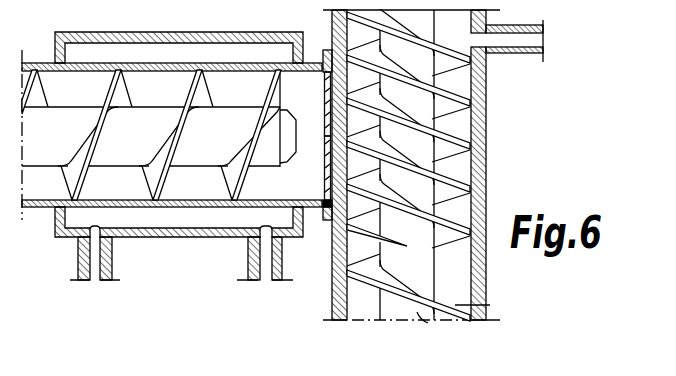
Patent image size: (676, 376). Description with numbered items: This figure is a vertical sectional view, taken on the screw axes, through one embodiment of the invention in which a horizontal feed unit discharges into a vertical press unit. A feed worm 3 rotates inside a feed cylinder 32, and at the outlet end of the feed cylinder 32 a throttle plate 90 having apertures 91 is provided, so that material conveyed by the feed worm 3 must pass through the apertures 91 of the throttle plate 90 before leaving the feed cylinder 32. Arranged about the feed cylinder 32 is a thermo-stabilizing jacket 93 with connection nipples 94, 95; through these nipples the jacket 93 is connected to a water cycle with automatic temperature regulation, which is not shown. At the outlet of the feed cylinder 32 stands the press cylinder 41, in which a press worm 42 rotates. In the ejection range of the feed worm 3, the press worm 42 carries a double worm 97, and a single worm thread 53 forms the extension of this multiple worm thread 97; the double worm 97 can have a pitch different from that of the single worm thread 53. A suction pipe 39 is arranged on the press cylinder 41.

The feed worm 3 is at (234, 116).
The feed cylinder 32 is at (132, 210).
The suction pipe 39 is at (545, 50).
The press cylinder 41 is at (473, 170).
The press worm 42 is at (428, 323).
The single worm thread 53 is at (490, 305).
The throttle plate 90 is at (325, 184).
The apertures 91 is at (325, 104).
The thermo-stabilizing jacket 93 is at (200, 237).
The connection nipple 94 is at (95, 273).
The connection nipple 95 is at (263, 273).
The double worm 97 is at (472, 107).